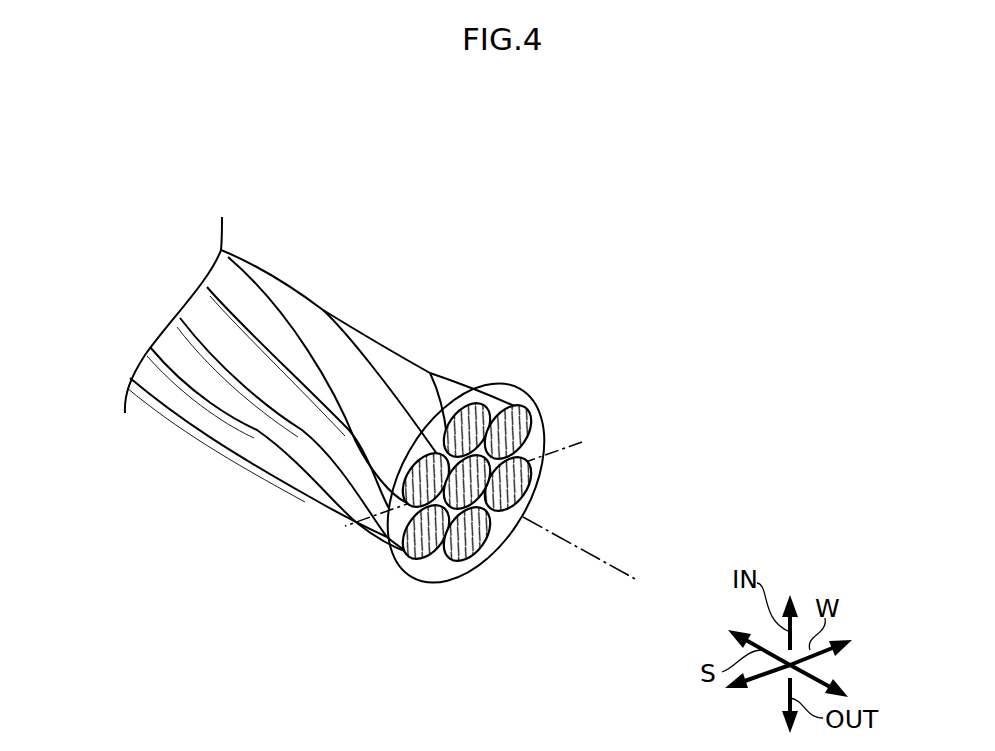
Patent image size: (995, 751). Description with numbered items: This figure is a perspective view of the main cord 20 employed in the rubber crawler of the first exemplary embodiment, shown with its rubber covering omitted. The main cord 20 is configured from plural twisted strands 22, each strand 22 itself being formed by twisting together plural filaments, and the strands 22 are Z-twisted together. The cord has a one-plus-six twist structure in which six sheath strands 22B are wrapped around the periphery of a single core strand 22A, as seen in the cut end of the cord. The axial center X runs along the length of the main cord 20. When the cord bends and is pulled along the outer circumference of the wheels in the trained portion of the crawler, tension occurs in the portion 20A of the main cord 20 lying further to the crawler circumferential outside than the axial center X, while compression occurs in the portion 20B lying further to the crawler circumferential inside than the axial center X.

The main cord 20 is at (543, 387).
The portion further to the crawler circumferential outside than the axial center 20A is at (407, 580).
The portion further to the crawler circumferential inside than the axial center 20B is at (500, 383).
The strand 22 is at (540, 519).
The core strand 22A is at (462, 497).
The sheath strand 22B is at (528, 432).
The axial center X is at (615, 560).